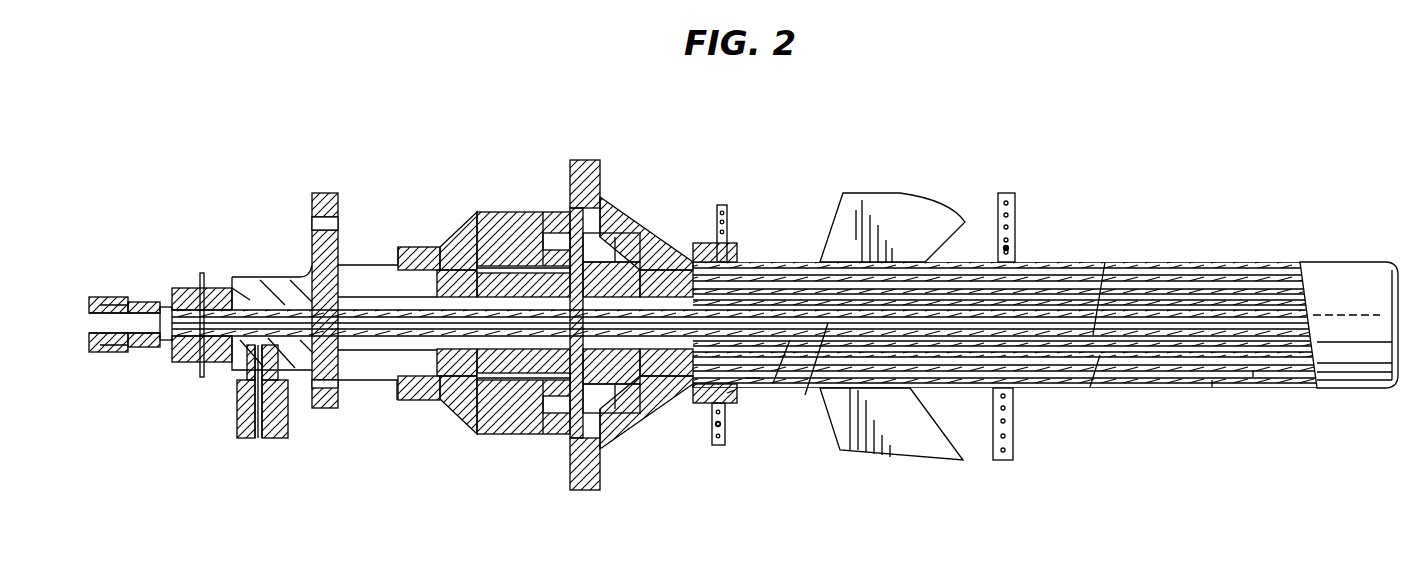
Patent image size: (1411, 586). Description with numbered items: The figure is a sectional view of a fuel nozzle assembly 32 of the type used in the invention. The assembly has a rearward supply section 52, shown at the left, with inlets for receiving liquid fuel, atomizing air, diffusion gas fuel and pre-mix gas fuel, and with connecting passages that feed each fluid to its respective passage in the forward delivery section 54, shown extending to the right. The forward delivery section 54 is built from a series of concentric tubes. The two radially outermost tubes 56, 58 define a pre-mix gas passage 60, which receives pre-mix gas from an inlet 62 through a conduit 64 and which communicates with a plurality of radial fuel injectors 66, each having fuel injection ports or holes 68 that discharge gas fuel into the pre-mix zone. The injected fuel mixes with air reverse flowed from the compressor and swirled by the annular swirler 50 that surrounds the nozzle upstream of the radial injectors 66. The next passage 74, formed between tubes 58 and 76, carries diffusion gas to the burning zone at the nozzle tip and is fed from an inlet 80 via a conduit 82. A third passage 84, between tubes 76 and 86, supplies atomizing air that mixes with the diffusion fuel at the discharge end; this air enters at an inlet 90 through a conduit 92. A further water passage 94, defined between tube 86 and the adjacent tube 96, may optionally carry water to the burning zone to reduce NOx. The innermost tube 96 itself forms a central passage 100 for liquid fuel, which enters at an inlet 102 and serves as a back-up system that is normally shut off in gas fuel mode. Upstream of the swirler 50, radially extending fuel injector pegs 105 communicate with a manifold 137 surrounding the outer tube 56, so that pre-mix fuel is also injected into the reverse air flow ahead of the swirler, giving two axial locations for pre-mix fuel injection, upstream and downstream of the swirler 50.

The fuel nozzle assembly 32 is at (687, 476).
The annular swirler 50 is at (867, 258).
The rearward supply section 52 is at (467, 451).
The forward delivery section 54 is at (1152, 392).
The outer concentric tube 56 is at (1212, 387).
The concentric tube 58 is at (1253, 377).
The pre-mix gas passage 60 is at (730, 270).
The pre-mix gas inlet 62 is at (522, 222).
The conduit 64 is at (602, 238).
The radial fuel injector 66 is at (993, 222).
The fuel injection port 68 is at (1008, 248).
The diffusion gas passage 74 is at (762, 290).
The concentric tube 76 is at (1090, 387).
The diffusion gas inlet 80 is at (460, 236).
The conduit 82 is at (507, 276).
The atomizing air passage 84 is at (778, 383).
The concentric tube 86 is at (1105, 262).
The atomizing air inlet 90 is at (357, 278).
The conduit 92 is at (458, 286).
The water passage 94 is at (727, 396).
The innermost concentric tube 96 is at (1145, 330).
The central liquid fuel passage 100 is at (808, 390).
The liquid fuel inlet 102 is at (116, 342).
The fuel injector peg 105 is at (726, 425).
The manifold 137 is at (745, 378).